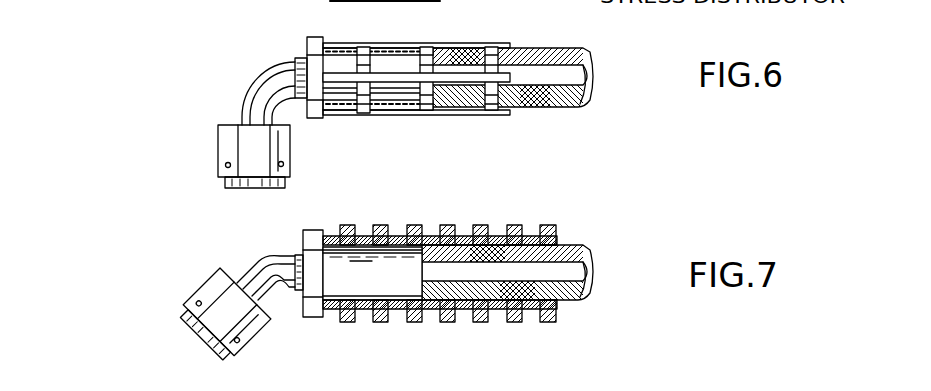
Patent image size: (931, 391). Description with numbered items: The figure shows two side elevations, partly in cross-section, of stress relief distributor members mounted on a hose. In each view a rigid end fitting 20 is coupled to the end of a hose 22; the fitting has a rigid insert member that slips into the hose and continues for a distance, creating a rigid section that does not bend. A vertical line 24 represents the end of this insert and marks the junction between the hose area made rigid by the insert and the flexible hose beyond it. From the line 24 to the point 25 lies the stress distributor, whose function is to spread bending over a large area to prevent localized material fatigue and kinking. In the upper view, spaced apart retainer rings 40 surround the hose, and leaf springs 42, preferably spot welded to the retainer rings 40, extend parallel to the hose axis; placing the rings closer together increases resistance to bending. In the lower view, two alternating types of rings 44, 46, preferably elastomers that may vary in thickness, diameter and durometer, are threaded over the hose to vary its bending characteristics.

In FIG. 6, the end fitting 20 is at (148, 188).
In FIG. 7, the end fitting 20 is at (140, 372).
In FIG. 6, the hose 22 is at (565, 72).
In FIG. 7, the hose 22 is at (566, 243).
In FIG. 6, the vertical line 24 is at (442, 55).
In FIG. 7, the vertical line 24 is at (437, 240).
In FIG. 6, the point 25 is at (584, 81).
In FIG. 7, the point 25 is at (584, 303).
In FIG. 6, the retainer rings 40 is at (362, 47).
In FIG. 6, the leaf springs 42 is at (466, 43).
In FIG. 7, the rings 44 is at (482, 323).
In FIG. 7, the rings 46 is at (498, 312).